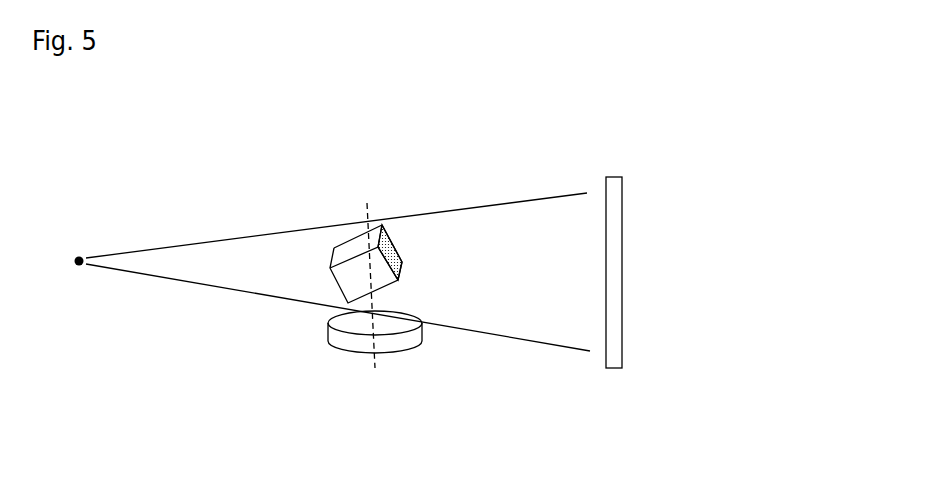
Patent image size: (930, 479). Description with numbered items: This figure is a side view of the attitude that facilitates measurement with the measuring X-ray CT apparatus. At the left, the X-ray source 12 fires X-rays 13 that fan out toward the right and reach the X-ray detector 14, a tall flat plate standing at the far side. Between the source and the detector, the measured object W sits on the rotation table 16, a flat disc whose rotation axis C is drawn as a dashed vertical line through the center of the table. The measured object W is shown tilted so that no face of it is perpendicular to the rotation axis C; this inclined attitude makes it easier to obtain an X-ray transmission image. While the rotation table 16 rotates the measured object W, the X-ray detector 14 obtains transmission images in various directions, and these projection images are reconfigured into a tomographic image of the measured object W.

The X-ray source 12 is at (79, 256).
The X-rays 13 is at (292, 230).
The X-ray detector 14 is at (622, 225).
The rotation table 16 is at (393, 343).
The measured object W is at (398, 248).
The rotation axis C is at (375, 281).